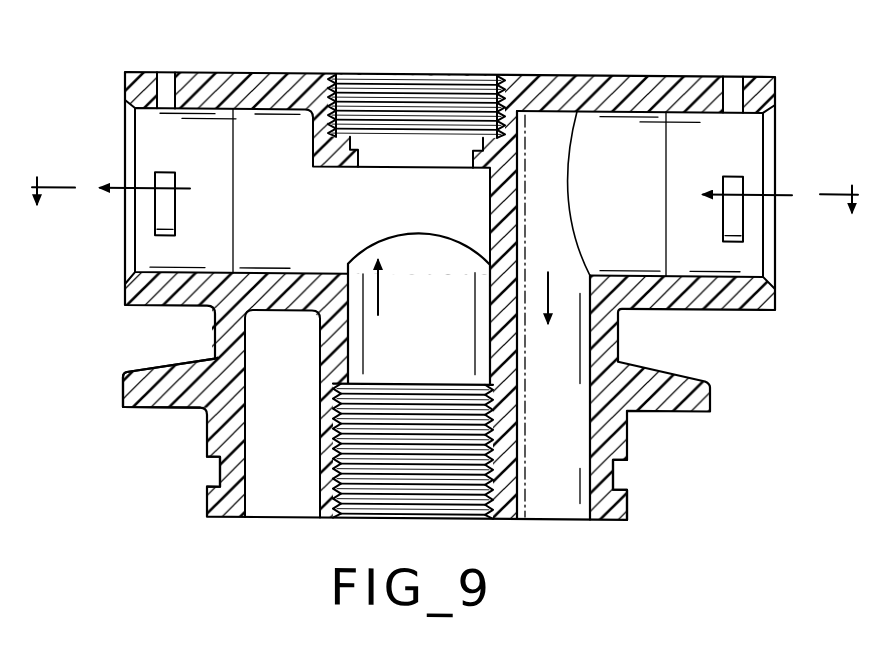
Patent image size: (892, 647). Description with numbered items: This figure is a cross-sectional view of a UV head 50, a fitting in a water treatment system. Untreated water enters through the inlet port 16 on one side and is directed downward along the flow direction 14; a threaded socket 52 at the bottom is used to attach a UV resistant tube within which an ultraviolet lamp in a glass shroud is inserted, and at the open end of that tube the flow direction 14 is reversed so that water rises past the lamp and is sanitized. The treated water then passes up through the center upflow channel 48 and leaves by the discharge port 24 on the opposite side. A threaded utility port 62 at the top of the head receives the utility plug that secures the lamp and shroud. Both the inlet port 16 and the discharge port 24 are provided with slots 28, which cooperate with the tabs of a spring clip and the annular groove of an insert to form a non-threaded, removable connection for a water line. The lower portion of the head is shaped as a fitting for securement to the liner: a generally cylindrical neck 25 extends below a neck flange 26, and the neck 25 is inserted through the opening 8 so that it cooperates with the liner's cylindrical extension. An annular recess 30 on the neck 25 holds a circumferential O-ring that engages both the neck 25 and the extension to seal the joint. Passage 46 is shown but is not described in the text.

The opening 8 is at (443, 212).
The flow direction 14 is at (118, 185).
The inlet port 16 is at (777, 128).
The discharge port 24 is at (124, 127).
The neck 25 is at (608, 501).
The neck flange 26 is at (147, 397).
The slots 28 is at (167, 80).
The annular recess 30 is at (213, 476).
The vertical passage 46 is at (553, 465).
The center upflow channel 48 is at (418, 348).
The UV head 50 is at (572, 34).
The threaded socket 52 is at (455, 510).
The threaded utility port 62 is at (425, 72).